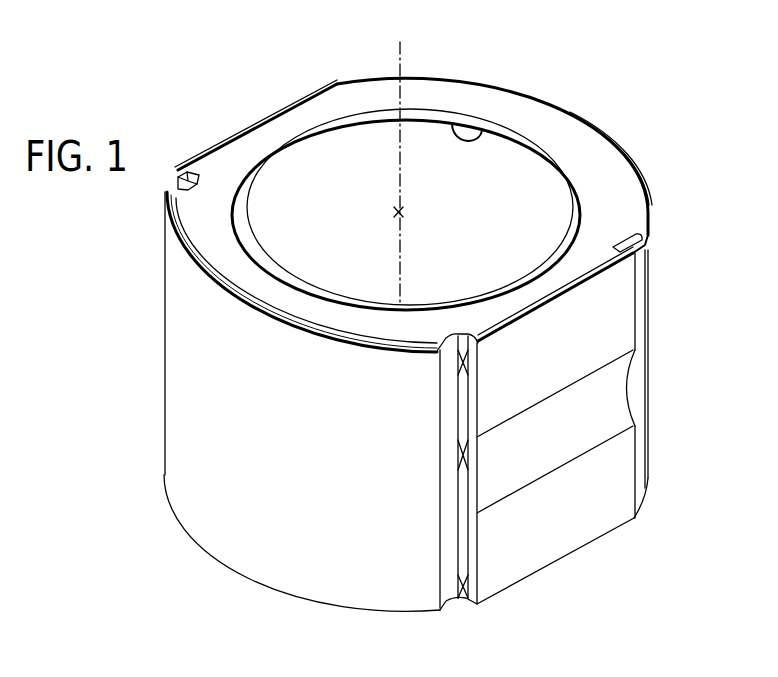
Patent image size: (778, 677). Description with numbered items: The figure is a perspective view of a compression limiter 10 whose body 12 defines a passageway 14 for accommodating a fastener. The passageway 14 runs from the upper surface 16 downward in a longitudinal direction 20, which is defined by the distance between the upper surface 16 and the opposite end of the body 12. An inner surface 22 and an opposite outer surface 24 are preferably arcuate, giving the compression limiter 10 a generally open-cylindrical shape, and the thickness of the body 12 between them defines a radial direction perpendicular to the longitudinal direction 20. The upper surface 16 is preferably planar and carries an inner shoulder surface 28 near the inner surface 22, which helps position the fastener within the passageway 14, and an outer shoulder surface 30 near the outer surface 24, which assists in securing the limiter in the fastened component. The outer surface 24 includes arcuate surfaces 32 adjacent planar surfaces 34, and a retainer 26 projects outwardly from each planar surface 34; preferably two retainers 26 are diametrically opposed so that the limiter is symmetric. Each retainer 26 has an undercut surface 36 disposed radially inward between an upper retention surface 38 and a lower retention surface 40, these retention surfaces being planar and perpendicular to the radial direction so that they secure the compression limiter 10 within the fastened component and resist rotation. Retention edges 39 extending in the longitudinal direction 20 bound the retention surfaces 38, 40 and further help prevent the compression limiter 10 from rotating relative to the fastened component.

The compression limiter 10 is at (624, 88).
The body 12 is at (648, 181).
The passageway 14 is at (394, 158).
The upper surface 16 is at (560, 137).
The longitudinal direction 20 is at (397, 62).
The inner surface 22 is at (357, 221).
The outer surface 24 is at (203, 425).
The retainer 26 is at (213, 149).
The inner shoulder surface 28 is at (482, 132).
The outer shoulder surface 30 is at (626, 158).
The arcuate surface 32 is at (226, 548).
The planar surface 34 is at (641, 377).
The undercut surface 36 is at (601, 405).
The upper retention surface 38 is at (612, 287).
The retention edge 39 is at (466, 551).
The lower retention surface 40 is at (605, 499).